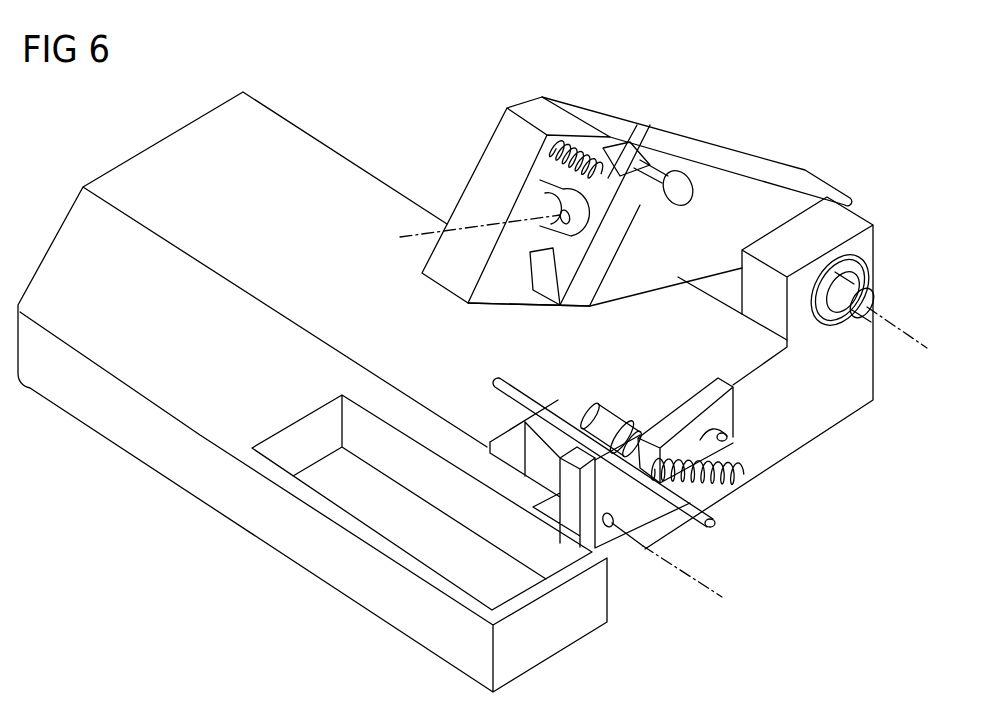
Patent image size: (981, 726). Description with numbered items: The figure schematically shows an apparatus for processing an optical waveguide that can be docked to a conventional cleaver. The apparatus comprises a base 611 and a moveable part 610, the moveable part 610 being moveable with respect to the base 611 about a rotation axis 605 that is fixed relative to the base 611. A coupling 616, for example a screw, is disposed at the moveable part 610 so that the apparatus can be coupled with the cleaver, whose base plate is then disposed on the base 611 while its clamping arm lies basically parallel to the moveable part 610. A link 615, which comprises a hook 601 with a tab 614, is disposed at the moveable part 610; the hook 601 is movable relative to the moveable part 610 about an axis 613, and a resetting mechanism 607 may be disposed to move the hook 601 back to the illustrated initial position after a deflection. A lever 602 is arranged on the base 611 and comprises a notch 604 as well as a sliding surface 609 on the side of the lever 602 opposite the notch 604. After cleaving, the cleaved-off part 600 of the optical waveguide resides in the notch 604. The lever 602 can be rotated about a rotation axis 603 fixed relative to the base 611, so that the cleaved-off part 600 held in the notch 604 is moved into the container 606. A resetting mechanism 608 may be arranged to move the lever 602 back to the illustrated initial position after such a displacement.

The cleaved-off part 600 is at (523, 402).
The hook 601 is at (613, 224).
The lever 602 is at (708, 413).
The rotation axis 603 is at (705, 585).
The notch 604 is at (618, 428).
The rotation axis 605 is at (866, 302).
The container 606 is at (333, 465).
The resetting mechanism 607 is at (577, 138).
The resetting mechanism 608 is at (728, 487).
The sliding surface 609 is at (734, 433).
The moveable part 610 is at (710, 172).
The base 611 is at (835, 410).
The axis 613 is at (418, 236).
The tab 614 is at (547, 277).
The link 615 is at (700, 260).
The coupling 616 is at (661, 173).